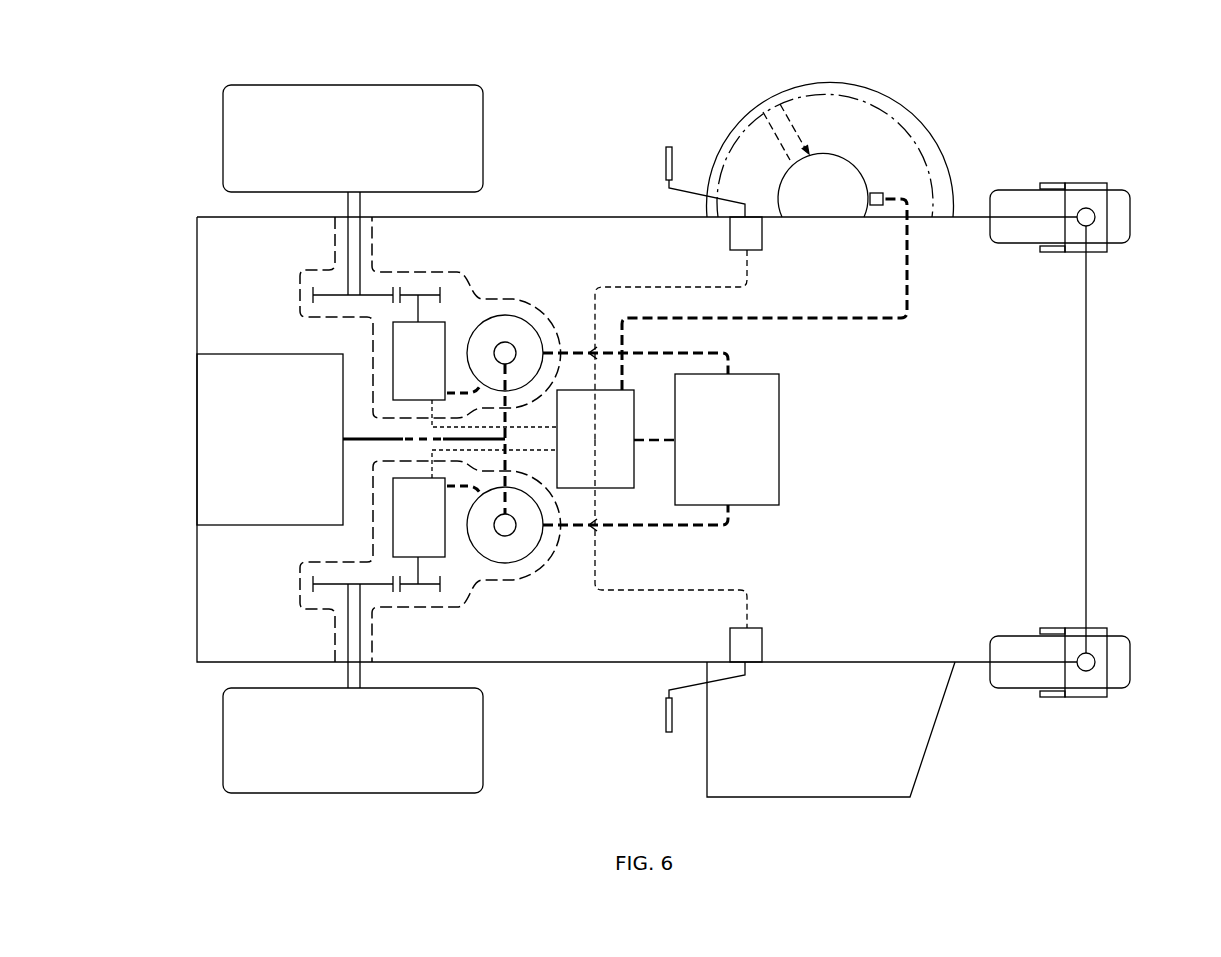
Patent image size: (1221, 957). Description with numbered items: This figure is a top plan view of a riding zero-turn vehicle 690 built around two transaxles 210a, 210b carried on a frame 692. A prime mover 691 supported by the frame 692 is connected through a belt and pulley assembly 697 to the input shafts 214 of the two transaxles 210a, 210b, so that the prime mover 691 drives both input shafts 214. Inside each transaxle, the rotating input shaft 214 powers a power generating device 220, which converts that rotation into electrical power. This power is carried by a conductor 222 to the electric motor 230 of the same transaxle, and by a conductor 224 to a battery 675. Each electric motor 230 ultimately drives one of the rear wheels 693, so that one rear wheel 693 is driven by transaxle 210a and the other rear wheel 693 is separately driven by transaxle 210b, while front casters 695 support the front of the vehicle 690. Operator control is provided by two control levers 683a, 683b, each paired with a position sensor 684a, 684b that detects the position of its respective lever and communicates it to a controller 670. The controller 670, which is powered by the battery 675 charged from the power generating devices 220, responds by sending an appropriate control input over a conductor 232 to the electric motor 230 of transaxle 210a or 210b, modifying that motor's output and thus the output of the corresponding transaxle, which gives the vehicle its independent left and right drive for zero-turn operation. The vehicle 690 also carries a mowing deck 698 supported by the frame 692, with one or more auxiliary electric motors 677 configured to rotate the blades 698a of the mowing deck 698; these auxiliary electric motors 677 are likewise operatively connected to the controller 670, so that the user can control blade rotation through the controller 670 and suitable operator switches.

The zero-turn vehicle 690 is at (128, 96).
The prime mover 691 is at (252, 500).
The frame 692 is at (547, 217).
The rear wheels 693 is at (353, 85).
The front casters 695 is at (1132, 217).
The belt and pulley assembly 697 is at (367, 439).
The mowing deck 698 is at (825, 82).
The blades 698a is at (798, 127).
The auxiliary electric motors 677 is at (806, 200).
The control lever 683a is at (665, 163).
The control lever 683b is at (665, 715).
The position sensor 684a is at (730, 232).
The position sensor 684b is at (730, 645).
The controller 670 is at (580, 450).
The battery 675 is at (710, 452).
The conductor 224 is at (707, 352).
The conductor 232 is at (540, 425).
The transaxle 210a is at (489, 258).
The transaxle 210b is at (489, 621).
The input shaft 214 is at (513, 345).
The power generating device 220 is at (505, 315).
The conductor 222 is at (462, 390).
The electric motor 230 is at (402, 352).